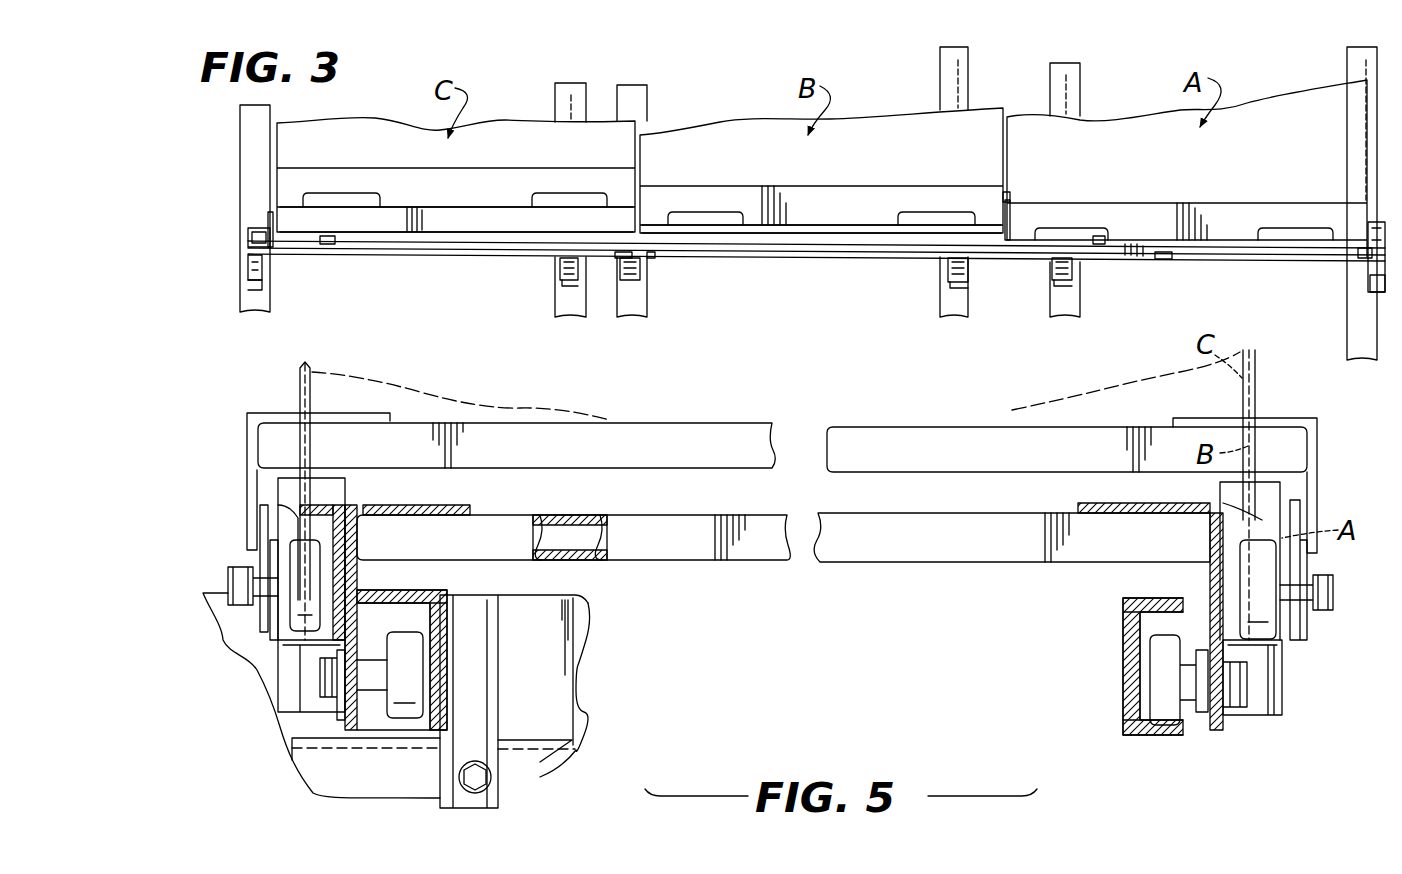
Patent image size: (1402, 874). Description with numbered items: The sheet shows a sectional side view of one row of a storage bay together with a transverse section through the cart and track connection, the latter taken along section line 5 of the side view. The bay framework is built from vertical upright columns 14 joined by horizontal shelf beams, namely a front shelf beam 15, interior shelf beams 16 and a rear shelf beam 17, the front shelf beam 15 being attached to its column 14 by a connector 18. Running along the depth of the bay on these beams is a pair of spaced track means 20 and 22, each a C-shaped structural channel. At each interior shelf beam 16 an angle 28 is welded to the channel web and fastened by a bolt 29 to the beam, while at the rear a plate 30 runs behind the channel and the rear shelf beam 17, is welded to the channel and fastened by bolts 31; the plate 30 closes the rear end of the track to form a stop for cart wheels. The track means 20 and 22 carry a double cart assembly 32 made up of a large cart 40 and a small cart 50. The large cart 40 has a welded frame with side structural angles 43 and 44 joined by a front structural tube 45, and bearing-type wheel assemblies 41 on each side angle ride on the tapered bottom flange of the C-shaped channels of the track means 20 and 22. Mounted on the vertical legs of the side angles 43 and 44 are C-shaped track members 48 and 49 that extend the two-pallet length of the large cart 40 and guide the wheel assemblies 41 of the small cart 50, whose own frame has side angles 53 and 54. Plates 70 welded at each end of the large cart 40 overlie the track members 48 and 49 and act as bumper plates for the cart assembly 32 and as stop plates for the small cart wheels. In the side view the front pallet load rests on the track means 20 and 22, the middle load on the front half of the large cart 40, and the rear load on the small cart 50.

In FIG. 3, the upright column 14 is at (243, 303).
In FIG. 3, the front shelf beam 15 is at (1375, 284).
In FIG. 3, the interior shelf beam 16 is at (558, 284).
In FIG. 5, the interior shelf beam 16 is at (352, 790).
In FIG. 3, the rear shelf beam 17 is at (262, 286).
In FIG. 3, the connector 18 is at (1372, 230).
In FIG. 5, the track means 20 is at (1130, 690).
In FIG. 3, the track means 22 is at (768, 256).
In FIG. 5, the track means 22 is at (387, 742).
In FIG. 3, the angle 28 is at (641, 272).
In FIG. 5, the bolt 29 is at (486, 778).
In FIG. 3, the plate 30 is at (247, 238).
In FIG. 3, the bolt 31 is at (262, 268).
In FIG. 3, the double cart assembly 32 is at (1012, 190).
In FIG. 3, the large cart 40 is at (795, 225).
In FIG. 5, the large cart 40 is at (883, 516).
In FIG. 5, the wheel assembly 41 is at (232, 574).
In FIG. 5, the side structural angle 43 is at (359, 538).
In FIG. 5, the side structural angle 44 is at (1212, 560).
In FIG. 5, the front structural tube 45 is at (832, 556).
In FIG. 5, the track member 48 is at (327, 512).
In FIG. 5, the track member 49 is at (1233, 522).
In FIG. 3, the small cart 50 is at (480, 205).
In FIG. 5, the small cart 50 is at (897, 427).
In FIG. 5, the side angle 53 is at (247, 446).
In FIG. 5, the side angle 54 is at (1317, 438).
In FIG. 3, the plate 70 is at (267, 226).
In FIG. 5, the plate 70 is at (272, 703).
In FIG. 3, the section line 5- 5 is at (1003, 160).